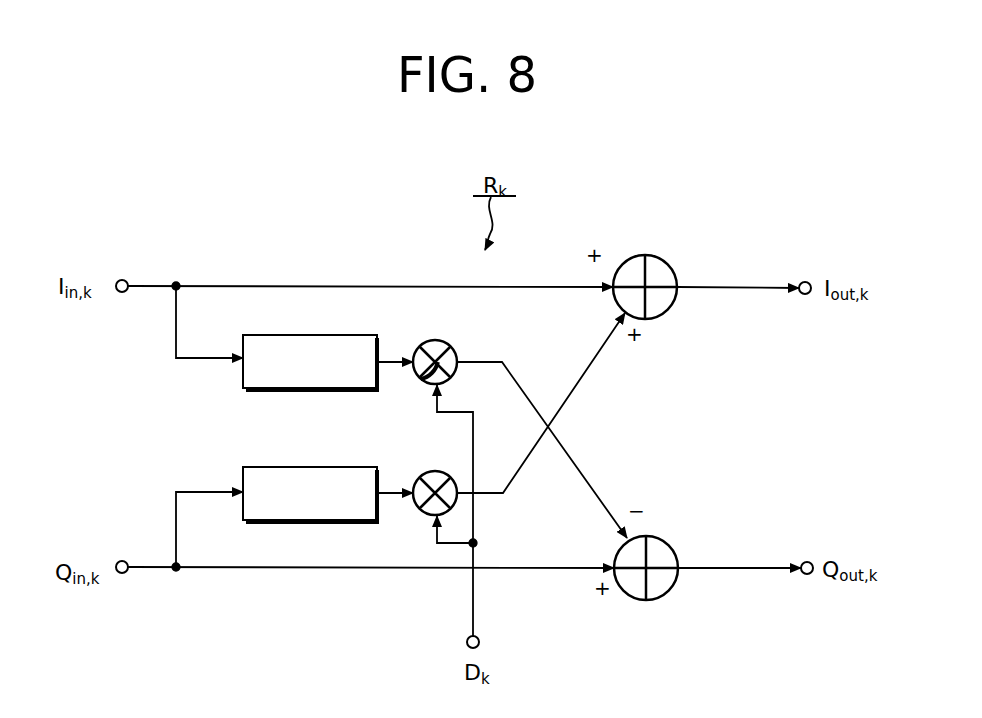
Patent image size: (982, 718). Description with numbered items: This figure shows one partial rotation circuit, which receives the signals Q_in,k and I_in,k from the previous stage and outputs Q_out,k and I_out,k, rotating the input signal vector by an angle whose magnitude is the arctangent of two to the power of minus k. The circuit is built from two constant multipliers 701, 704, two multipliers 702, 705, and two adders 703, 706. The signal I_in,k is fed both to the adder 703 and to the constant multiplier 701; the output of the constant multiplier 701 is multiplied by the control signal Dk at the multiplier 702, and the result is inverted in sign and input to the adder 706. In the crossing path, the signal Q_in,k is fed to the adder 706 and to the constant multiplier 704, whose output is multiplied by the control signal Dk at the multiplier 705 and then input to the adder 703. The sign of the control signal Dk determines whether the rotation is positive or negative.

The constant multiplier 701 is at (322, 335).
The multiplier 702 is at (449, 345).
The adder 703 is at (660, 257).
The constant multiplier 704 is at (322, 467).
The multiplier 705 is at (420, 509).
The adder 706 is at (663, 539).